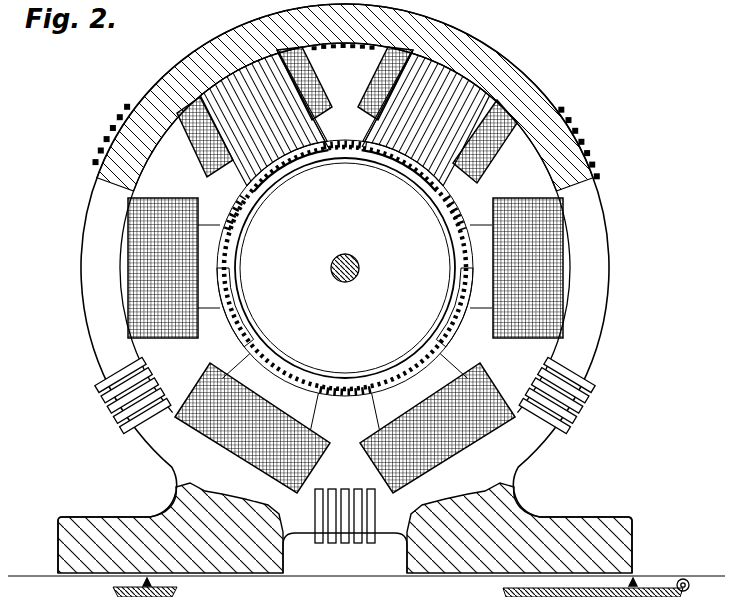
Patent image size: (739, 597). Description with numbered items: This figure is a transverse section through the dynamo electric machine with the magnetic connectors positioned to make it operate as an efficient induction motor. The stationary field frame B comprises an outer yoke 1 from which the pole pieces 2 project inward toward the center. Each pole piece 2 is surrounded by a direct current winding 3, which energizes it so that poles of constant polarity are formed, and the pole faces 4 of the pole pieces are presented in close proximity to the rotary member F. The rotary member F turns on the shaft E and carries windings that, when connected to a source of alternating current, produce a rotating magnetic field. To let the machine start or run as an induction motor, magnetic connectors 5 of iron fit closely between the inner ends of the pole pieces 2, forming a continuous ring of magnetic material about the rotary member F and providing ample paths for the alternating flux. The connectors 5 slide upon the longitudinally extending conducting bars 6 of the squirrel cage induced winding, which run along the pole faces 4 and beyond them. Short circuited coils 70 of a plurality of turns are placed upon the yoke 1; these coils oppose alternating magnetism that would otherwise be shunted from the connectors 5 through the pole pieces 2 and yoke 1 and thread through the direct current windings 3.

The yoke 1 is at (607, 267).
The pole pieces 2 is at (467, 457).
The direct current windings 3 is at (375, 462).
The pole faces 4 is at (300, 370).
The magnetic connectors 5 is at (697, 590).
The conducting bars 6 is at (366, 540).
The short circuited coils 70 is at (583, 412).
The field frame B is at (362, 97).
The shaft E is at (340, 280).
The rotary member F is at (345, 268).